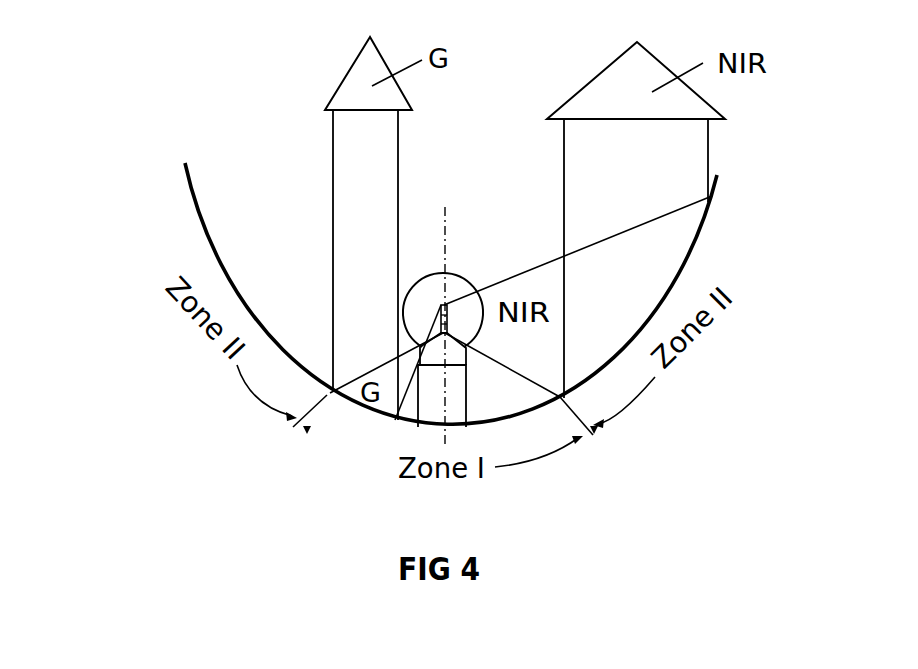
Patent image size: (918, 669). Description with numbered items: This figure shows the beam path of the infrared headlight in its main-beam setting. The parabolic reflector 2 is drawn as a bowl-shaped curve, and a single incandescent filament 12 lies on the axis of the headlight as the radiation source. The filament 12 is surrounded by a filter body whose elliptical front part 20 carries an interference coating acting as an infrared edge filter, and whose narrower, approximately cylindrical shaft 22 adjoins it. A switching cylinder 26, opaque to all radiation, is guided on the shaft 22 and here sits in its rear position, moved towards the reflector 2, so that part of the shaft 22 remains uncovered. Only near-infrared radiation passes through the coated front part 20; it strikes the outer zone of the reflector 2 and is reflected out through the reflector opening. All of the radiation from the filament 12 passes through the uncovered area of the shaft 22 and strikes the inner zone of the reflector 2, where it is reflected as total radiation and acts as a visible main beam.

The parabolic reflector 2 is at (207, 238).
The incandescent filament 12 is at (443, 304).
The front part 20 is at (463, 283).
The shaft 22 is at (466, 350).
The switching cylinder 26 is at (466, 398).